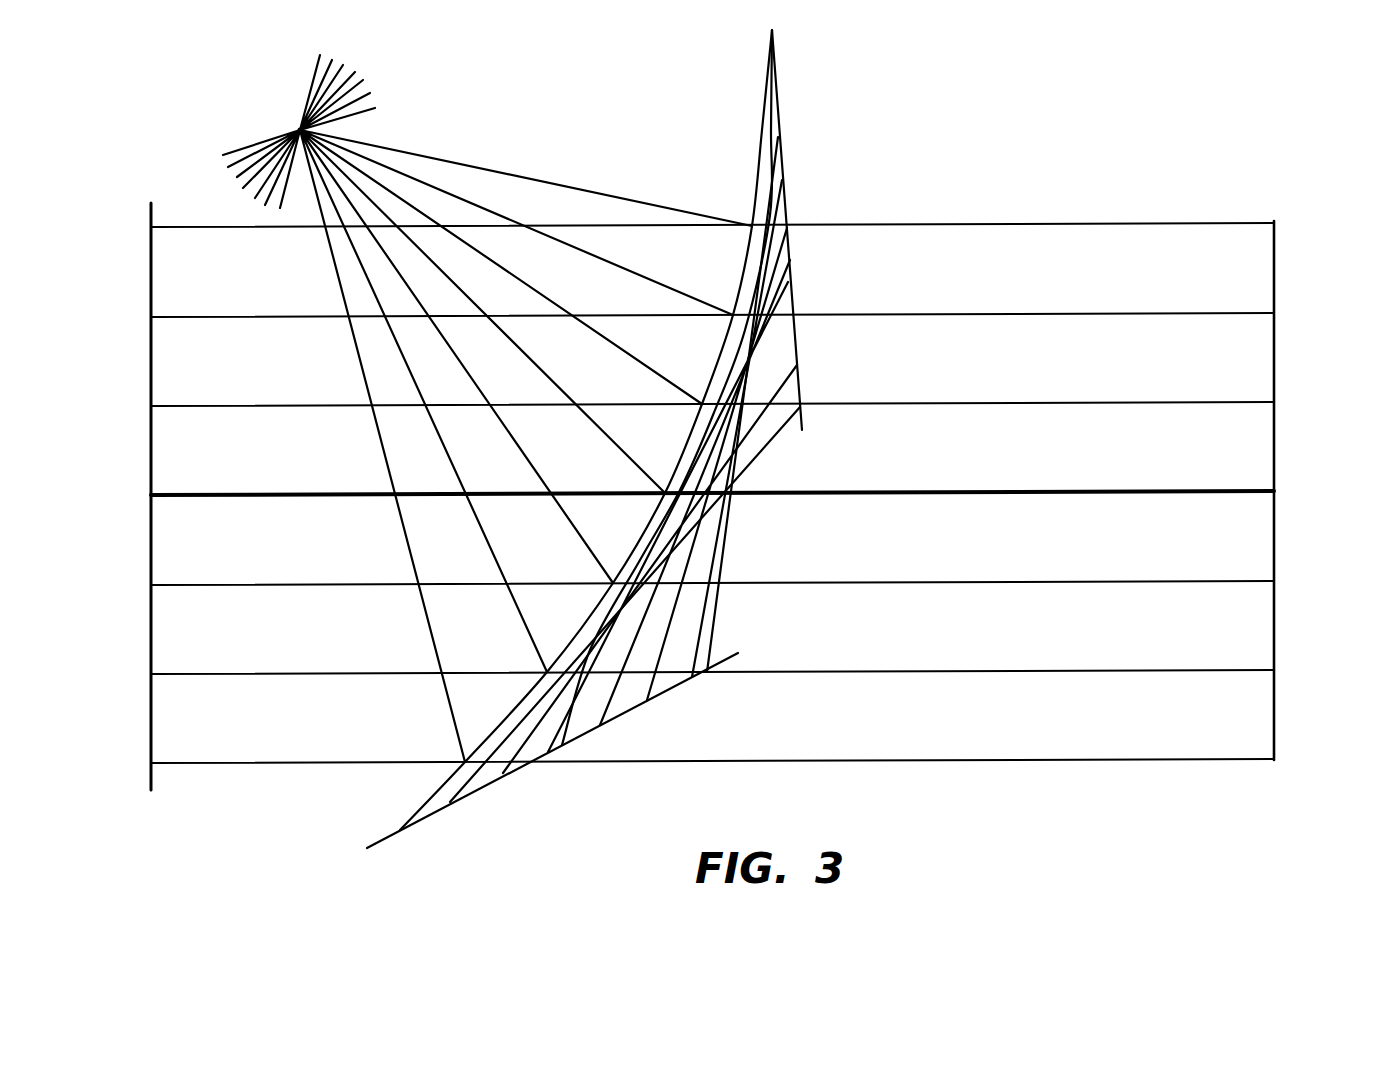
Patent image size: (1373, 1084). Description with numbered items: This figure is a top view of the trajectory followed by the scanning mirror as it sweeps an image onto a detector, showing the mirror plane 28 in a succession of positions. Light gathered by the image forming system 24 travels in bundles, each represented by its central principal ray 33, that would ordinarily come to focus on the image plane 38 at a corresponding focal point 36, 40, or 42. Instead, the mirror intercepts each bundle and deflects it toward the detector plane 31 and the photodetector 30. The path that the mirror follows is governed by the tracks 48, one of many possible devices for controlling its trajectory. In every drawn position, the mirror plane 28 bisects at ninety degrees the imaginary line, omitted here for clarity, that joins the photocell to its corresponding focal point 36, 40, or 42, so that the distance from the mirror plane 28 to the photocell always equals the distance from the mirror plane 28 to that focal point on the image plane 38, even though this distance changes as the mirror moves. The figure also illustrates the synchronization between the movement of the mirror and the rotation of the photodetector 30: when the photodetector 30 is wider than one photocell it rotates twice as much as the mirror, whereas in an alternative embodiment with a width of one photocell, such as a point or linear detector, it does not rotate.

The image forming system 24 is at (151, 553).
The mirror plane 28 is at (763, 443).
The photodetector 30 is at (300, 130).
The detector plane 31 is at (398, 80).
The principal ray 33 is at (227, 228).
The corresponding focal point 36 is at (1274, 403).
The image plane 38 is at (1274, 248).
The corresponding focal point 40 is at (1274, 585).
The corresponding focal point 42 is at (1274, 760).
The tracks 48 is at (780, 107).